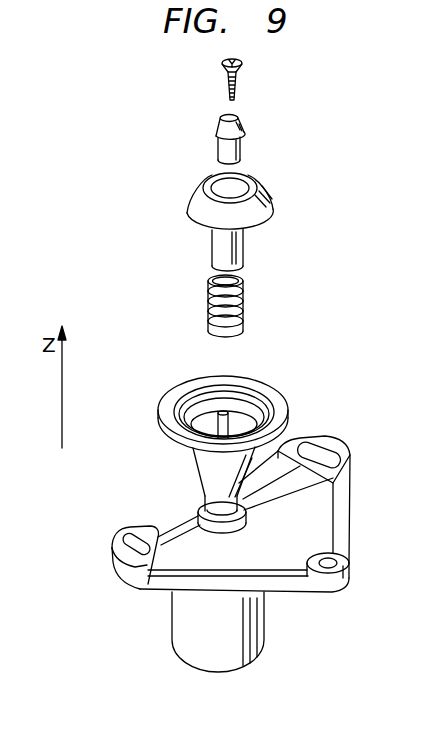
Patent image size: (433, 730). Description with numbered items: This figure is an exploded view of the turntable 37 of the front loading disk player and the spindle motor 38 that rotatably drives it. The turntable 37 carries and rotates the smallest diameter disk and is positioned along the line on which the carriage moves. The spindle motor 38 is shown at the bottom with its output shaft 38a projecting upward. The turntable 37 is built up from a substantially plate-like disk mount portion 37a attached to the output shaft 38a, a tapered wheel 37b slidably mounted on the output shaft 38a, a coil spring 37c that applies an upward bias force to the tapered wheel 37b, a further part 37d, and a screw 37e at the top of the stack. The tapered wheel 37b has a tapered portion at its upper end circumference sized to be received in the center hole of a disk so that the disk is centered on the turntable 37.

The turntable 37 is at (324, 55).
The disk mount portion 37a is at (160, 404).
The tapered wheel 37b is at (187, 205).
The coil spring 37c is at (208, 304).
The pin 37d is at (215, 144).
The screw 37e is at (222, 80).
The spindle motor 38 is at (266, 638).
The output shaft 38a is at (222, 412).